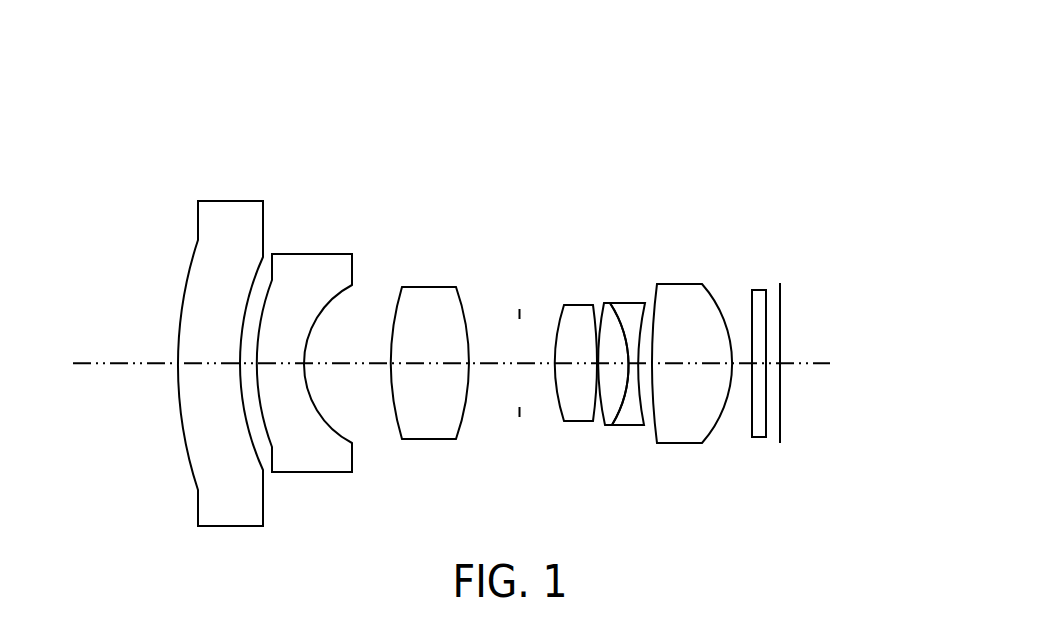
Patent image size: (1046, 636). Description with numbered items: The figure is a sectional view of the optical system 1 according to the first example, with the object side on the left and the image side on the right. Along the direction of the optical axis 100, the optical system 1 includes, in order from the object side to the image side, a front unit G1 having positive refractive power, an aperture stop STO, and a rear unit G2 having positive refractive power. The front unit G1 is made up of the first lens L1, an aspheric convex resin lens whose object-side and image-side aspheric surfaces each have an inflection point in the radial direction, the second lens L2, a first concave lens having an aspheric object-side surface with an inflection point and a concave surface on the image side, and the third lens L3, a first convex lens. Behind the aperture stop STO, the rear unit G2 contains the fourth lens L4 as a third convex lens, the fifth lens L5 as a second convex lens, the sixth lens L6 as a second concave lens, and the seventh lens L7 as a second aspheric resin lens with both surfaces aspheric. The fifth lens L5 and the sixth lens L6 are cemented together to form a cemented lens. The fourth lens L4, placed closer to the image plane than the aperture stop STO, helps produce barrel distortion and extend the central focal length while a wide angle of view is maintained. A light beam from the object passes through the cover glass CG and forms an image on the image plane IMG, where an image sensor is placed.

The optical system 1 is at (487, 28).
The optical axis 100 is at (800, 363).
The front unit G1 is at (183, 105).
The rear unit G2 is at (453, 102).
The first lens L1 is at (231, 216).
The second lens L2 is at (311, 260).
The third lens L3 is at (430, 287).
The fourth lens L4 is at (575, 308).
The fifth lens L5 is at (608, 303).
The sixth lens L6 is at (635, 302).
The seventh lens L7 is at (677, 288).
The aperture stop STO is at (520, 408).
The cover glass CG is at (758, 437).
The image plane IMG is at (780, 313).